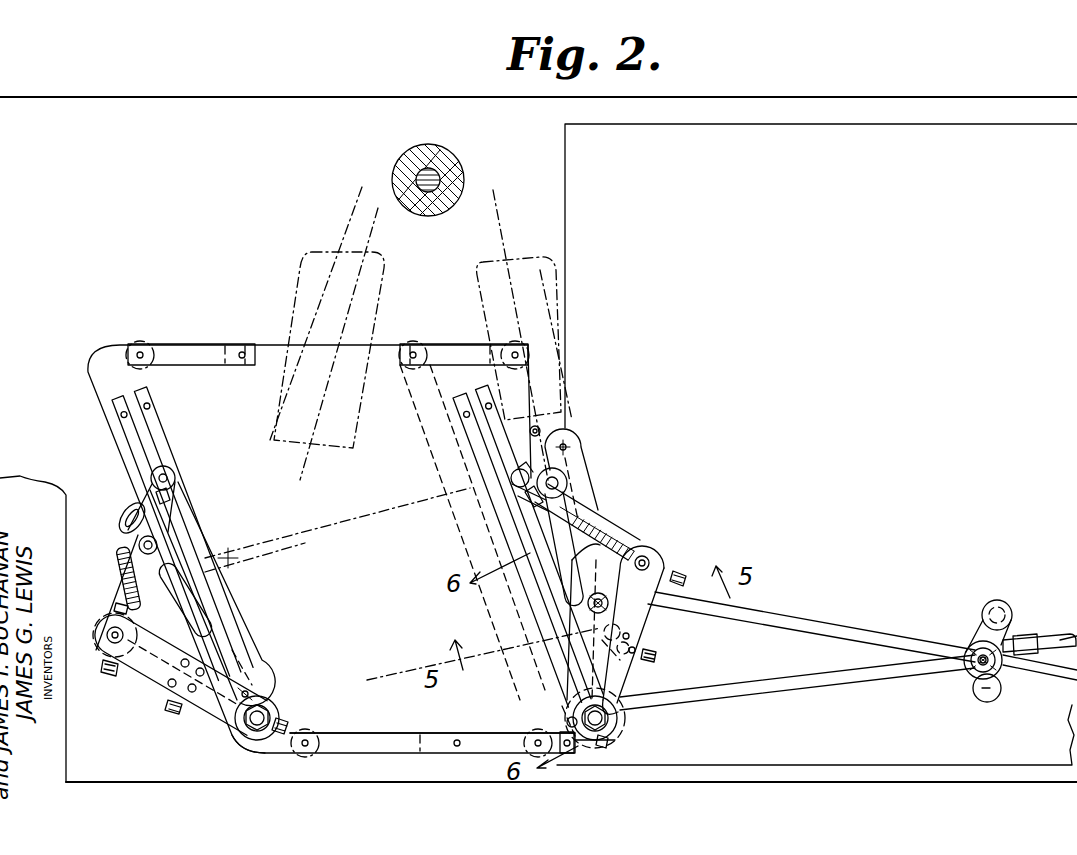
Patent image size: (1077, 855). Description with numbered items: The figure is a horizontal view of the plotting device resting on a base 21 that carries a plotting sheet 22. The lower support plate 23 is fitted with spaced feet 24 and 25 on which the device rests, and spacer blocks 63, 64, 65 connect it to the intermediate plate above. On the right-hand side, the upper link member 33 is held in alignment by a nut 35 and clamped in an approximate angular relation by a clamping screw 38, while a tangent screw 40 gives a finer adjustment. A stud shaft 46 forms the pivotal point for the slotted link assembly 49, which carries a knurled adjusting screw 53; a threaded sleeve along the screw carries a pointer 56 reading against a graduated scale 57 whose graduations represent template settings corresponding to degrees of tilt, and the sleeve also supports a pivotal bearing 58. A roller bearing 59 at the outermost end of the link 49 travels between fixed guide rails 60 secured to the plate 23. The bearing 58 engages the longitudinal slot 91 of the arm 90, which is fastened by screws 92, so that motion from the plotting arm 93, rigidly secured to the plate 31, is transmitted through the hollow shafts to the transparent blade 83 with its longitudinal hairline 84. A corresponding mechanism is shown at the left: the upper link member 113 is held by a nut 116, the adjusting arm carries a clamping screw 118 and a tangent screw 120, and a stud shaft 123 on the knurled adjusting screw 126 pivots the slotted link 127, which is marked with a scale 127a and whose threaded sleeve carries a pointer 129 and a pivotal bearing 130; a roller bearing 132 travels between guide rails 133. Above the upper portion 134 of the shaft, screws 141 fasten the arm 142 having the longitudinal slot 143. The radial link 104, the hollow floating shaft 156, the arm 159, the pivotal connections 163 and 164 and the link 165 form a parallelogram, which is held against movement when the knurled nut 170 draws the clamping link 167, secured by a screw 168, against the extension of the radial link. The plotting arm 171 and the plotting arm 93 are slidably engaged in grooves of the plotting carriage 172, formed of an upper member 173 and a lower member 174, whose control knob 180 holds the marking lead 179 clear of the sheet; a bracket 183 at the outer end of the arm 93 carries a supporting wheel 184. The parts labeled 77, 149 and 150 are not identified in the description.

The base 21 is at (222, 106).
The plotting sheet 22 is at (746, 130).
The lower support plate 23 is at (268, 346).
The feet 24 is at (152, 333).
The feet 25 is at (398, 168).
The plate 31 is at (624, 702).
The upper link member 33 is at (640, 650).
The nut 35 is at (570, 718).
The clamping screw 38 is at (622, 740).
The tangent screw 40 is at (656, 656).
The stud shaft 46 is at (660, 560).
The slotted link assembly 49 is at (668, 546).
The knurled adjusting screw 53 is at (690, 576).
The pointer 56 is at (598, 516).
The graduated scale 57 is at (614, 536).
The pivotal bearing 58 is at (540, 490).
The roller bearing 59 is at (510, 480).
The guide rails 60 is at (470, 416).
The spacer block 63 is at (470, 740).
The spacer block 64 is at (182, 344).
The spacer block 65 is at (458, 345).
The pin 77 is at (572, 730).
The transparent blade 83 is at (556, 270).
The longitudinal hairline 84 is at (522, 258).
The arm 90 is at (566, 660).
The longitudinal slot 91 is at (578, 484).
The screws 92 is at (620, 718).
The plotting arm 93 is at (768, 690).
The radial link 104 is at (398, 678).
The upper link member 113 is at (160, 685).
The nut 116 is at (268, 708).
The clamping screw 118 is at (286, 726).
The tangent screw 120 is at (176, 712).
The stud shaft 123 is at (122, 636).
The knurled adjusting screw 126 is at (112, 672).
The slotted link 127 is at (116, 556).
The scale 127a is at (120, 585).
The pointer 129 is at (162, 548).
The pivotal bearing 130 is at (118, 520).
The roller bearing 132 is at (178, 478).
The guide rails 133 is at (152, 428).
The upper portion of the shaft 134 is at (242, 745).
The screws 141 is at (248, 692).
The arm 142 is at (226, 650).
The longitudinal slot 143 is at (212, 598).
The ghost outline 149 is at (312, 262).
The axis line 150 is at (380, 262).
The hollow floating shaft 156 is at (632, 640).
The arm 159 is at (586, 472).
The pivotal connection 163 is at (232, 560).
The pivotal connection 164 is at (562, 438).
The link 165 is at (318, 526).
The clamping link 167 is at (412, 343).
The screw 168 is at (422, 330).
The knurled nut 170 is at (586, 760).
The plotting arm 171 is at (850, 632).
The plotting carriage 172 is at (962, 648).
The upper member 173 is at (1010, 648).
The lower member 174 is at (1056, 672).
The marking lead 179 is at (978, 690).
The control knob 180 is at (968, 668).
The bracket 183 is at (1076, 625).
The supporting wheel 184 is at (1076, 602).